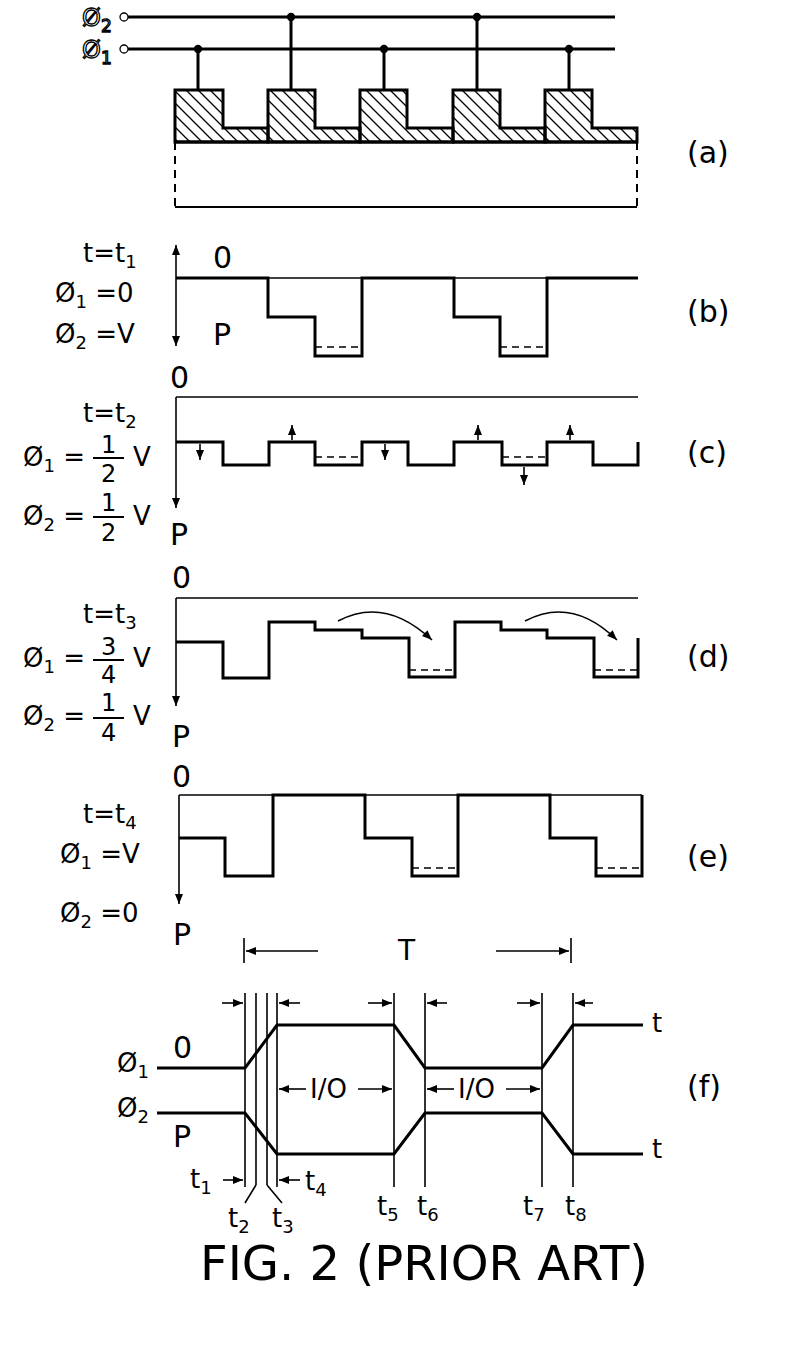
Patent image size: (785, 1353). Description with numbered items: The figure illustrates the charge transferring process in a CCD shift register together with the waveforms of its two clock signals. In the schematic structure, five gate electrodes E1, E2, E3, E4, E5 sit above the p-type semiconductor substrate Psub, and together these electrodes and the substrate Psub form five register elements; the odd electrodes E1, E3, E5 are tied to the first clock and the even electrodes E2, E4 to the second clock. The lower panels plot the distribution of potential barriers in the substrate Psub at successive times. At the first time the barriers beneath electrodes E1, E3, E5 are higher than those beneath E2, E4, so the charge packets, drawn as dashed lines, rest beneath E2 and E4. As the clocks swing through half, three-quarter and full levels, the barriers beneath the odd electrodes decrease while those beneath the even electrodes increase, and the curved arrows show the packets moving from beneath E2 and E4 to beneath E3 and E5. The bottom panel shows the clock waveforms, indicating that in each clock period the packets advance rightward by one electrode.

The gate electrode E1 is at (221, 94).
The gate electrode E2 is at (314, 78).
The gate electrode E3 is at (406, 94).
The gate electrode E4 is at (499, 78).
The gate electrode E5 is at (591, 94).
The p-type semiconductor substrate Psub is at (406, 174).